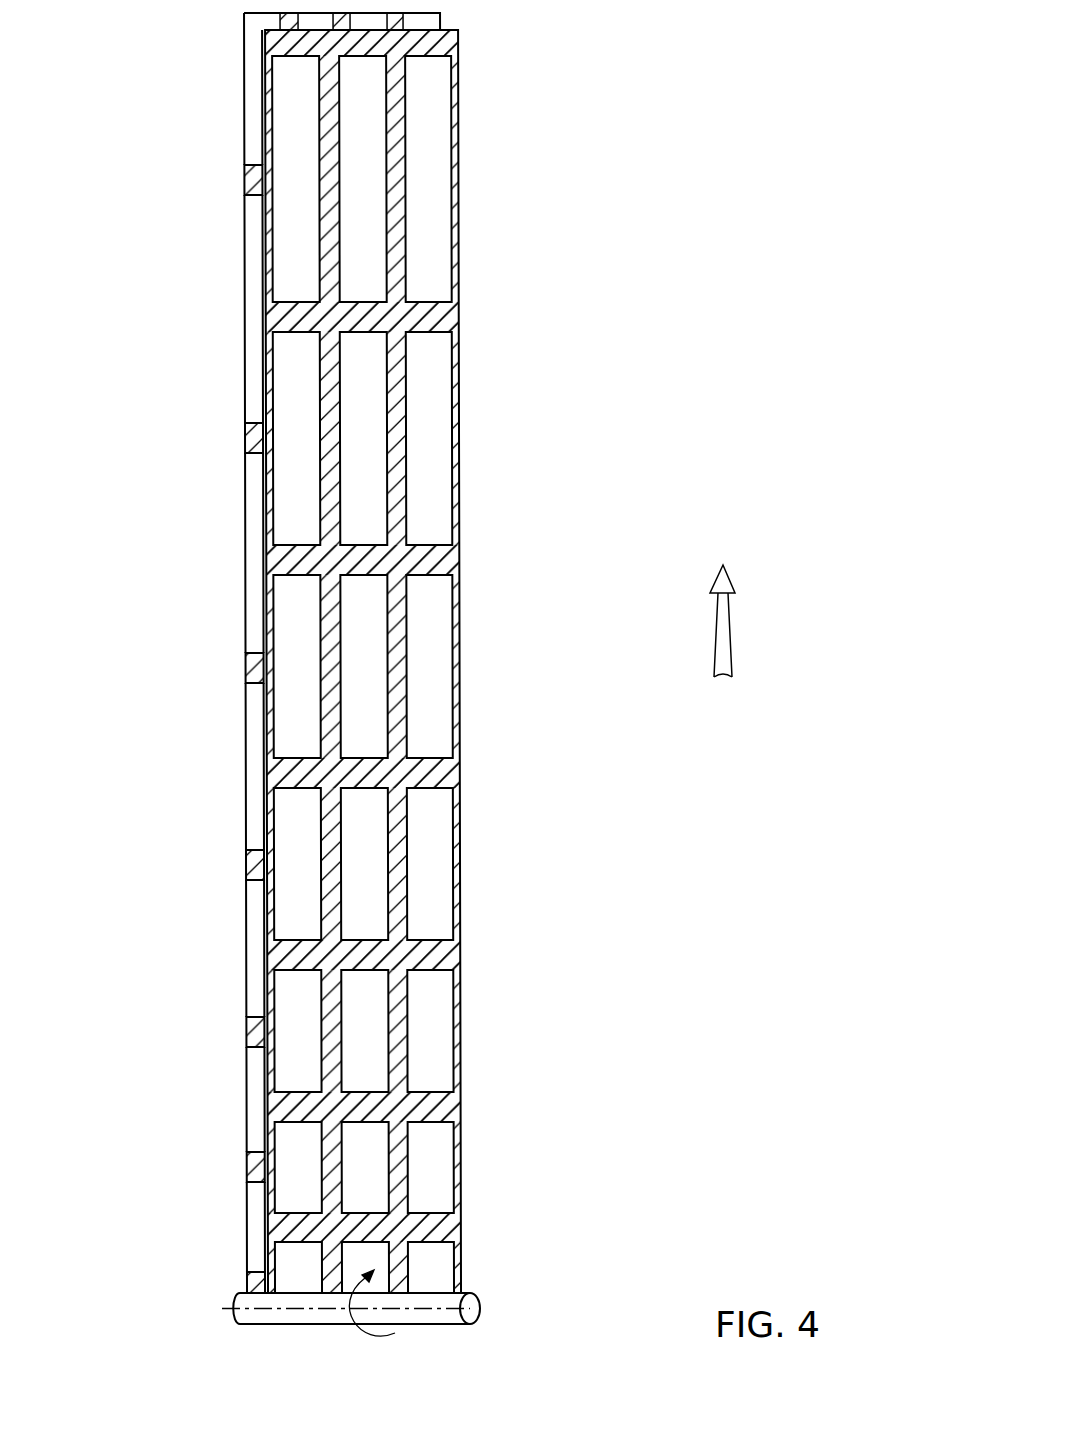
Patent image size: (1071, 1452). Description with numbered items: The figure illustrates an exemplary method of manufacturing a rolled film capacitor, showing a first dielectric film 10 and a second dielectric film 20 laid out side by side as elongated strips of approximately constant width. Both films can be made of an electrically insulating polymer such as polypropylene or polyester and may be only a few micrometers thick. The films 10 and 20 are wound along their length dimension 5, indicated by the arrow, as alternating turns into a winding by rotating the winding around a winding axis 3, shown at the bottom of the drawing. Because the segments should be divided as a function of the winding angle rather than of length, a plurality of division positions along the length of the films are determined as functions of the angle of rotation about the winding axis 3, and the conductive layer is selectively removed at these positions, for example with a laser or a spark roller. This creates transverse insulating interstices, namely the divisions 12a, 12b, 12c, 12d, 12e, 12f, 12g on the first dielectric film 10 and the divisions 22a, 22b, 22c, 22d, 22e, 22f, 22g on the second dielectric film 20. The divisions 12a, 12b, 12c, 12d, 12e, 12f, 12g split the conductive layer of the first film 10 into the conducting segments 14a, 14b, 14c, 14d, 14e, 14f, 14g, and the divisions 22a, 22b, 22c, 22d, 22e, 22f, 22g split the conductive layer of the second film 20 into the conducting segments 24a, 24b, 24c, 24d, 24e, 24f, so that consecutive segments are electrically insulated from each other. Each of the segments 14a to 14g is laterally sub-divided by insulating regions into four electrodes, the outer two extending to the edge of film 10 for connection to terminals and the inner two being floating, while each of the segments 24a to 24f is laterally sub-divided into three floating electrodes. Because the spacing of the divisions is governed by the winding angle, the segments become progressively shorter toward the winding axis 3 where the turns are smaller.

The winding axis 3 is at (480, 1308).
The length dimension 5 is at (724, 636).
The first dielectric film 10 is at (232, 125).
The division 12a is at (246, 1283).
The division 12b is at (246, 1170).
The division 12c is at (246, 1030).
The division 12d is at (246, 865).
The division 12e is at (246, 667).
The division 12f is at (246, 438).
The division 12g is at (246, 180).
The conducting segment 14a is at (254, 1228).
The conducting segment 14b is at (254, 1108).
The conducting segment 14c is at (254, 956).
The conducting segment 14d is at (254, 775).
The conducting segment 14e is at (254, 562).
The conducting segment 14f is at (254, 318).
The conducting segment 14g is at (254, 70).
The second dielectric film 20 is at (470, 110).
The division 22a is at (440, 1228).
The division 22b is at (443, 1108).
The division 22c is at (443, 956).
The division 22d is at (443, 773).
The division 22e is at (440, 562).
The division 22f is at (440, 318).
The division 22g is at (446, 42).
The conducting segment 24a is at (430, 1170).
The conducting segment 24b is at (430, 1030).
The conducting segment 24c is at (430, 864).
The conducting segment 24d is at (430, 667).
The conducting segment 24e is at (430, 438).
The conducting segment 24f is at (428, 178).